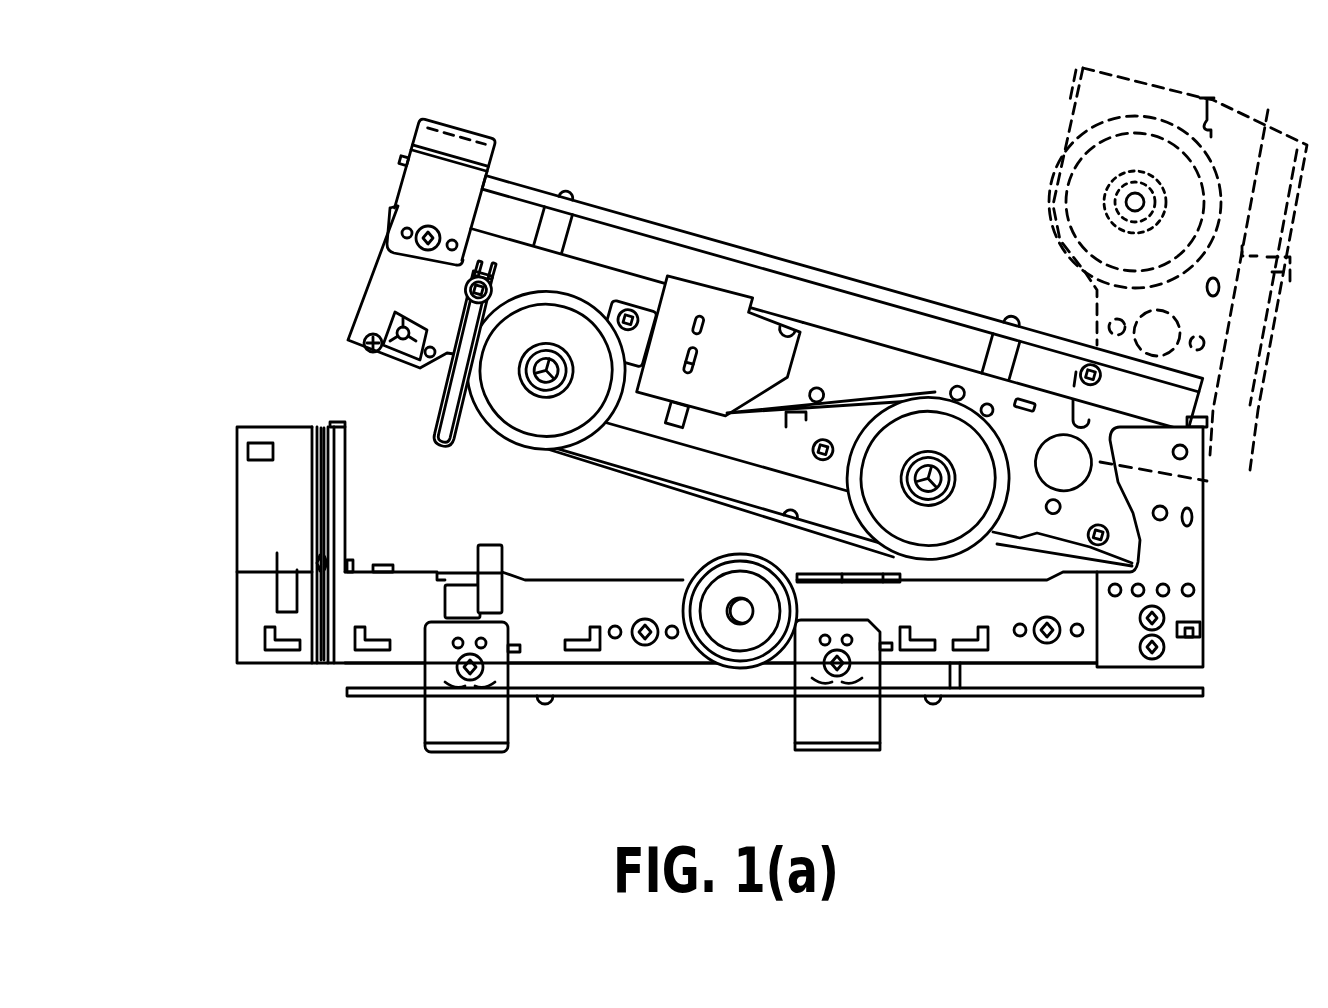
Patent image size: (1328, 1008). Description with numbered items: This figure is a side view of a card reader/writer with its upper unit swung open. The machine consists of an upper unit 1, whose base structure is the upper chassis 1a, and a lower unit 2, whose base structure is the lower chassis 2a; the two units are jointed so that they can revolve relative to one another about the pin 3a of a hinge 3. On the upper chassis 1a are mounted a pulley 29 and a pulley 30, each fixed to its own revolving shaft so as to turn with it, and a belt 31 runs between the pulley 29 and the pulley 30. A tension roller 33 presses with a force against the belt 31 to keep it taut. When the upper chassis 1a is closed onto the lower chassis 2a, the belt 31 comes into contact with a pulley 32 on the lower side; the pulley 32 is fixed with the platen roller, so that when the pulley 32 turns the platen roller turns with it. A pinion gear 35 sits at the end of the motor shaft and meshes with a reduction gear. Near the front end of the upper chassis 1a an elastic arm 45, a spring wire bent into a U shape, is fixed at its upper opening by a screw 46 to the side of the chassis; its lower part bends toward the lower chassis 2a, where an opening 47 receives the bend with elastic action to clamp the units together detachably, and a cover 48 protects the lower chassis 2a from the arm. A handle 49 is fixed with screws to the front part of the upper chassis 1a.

The upper unit 1 is at (350, 326).
The upper chassis 1a is at (816, 368).
The lower unit 2 is at (235, 632).
The lower chassis 2a is at (630, 653).
The hinge 3 is at (1188, 563).
The pin 3a is at (1183, 455).
The pulley 29 is at (940, 423).
The pulley 30 is at (575, 337).
The belt 31 is at (862, 395).
The pulley 32 is at (737, 673).
The tension roller 33 is at (652, 320).
The pinion gear 35 is at (418, 242).
The elastic arm 45 is at (432, 404).
The screw 46 is at (483, 272).
The opening 47 is at (450, 603).
The cover 48 is at (463, 577).
The handle 49 is at (430, 138).